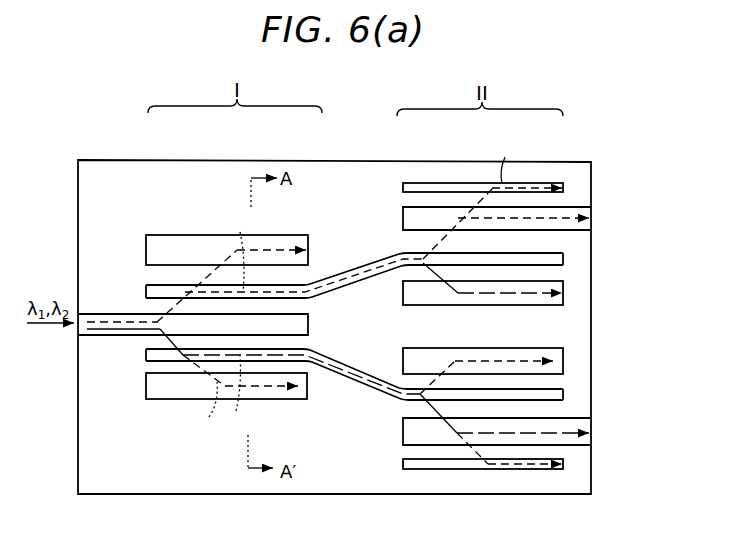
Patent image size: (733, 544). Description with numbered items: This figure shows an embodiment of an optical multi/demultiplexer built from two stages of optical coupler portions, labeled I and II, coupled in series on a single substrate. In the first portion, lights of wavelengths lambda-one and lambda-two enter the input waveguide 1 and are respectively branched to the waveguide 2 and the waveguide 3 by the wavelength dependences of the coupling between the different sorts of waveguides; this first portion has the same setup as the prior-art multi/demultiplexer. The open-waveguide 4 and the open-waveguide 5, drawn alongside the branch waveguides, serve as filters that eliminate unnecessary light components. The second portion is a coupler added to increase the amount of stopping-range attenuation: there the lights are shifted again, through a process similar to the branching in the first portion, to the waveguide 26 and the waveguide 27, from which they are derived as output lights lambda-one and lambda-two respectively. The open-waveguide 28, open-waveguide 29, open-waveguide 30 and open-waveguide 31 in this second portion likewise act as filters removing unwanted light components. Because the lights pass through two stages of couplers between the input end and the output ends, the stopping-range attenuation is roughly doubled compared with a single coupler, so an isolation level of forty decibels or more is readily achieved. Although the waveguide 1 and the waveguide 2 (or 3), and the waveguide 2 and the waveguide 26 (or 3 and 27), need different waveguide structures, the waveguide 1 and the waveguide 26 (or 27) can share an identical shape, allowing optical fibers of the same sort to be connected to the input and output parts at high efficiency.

The waveguide 1 is at (301, 327).
The waveguide 2 is at (325, 278).
The waveguide 3 is at (337, 362).
The open-waveguide 4 is at (266, 235).
The open-waveguide 5 is at (304, 393).
The waveguide 26 is at (560, 208).
The waveguide 27 is at (551, 423).
The open-waveguide 28 is at (532, 183).
The open-waveguide 29 is at (525, 306).
The open-waveguide 30 is at (420, 350).
The open-waveguide 31 is at (453, 470).